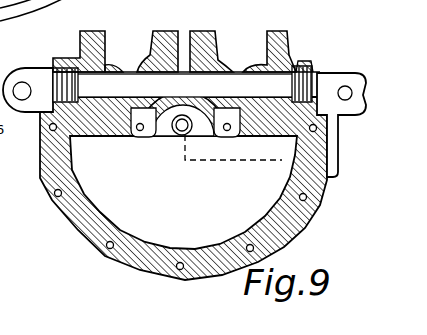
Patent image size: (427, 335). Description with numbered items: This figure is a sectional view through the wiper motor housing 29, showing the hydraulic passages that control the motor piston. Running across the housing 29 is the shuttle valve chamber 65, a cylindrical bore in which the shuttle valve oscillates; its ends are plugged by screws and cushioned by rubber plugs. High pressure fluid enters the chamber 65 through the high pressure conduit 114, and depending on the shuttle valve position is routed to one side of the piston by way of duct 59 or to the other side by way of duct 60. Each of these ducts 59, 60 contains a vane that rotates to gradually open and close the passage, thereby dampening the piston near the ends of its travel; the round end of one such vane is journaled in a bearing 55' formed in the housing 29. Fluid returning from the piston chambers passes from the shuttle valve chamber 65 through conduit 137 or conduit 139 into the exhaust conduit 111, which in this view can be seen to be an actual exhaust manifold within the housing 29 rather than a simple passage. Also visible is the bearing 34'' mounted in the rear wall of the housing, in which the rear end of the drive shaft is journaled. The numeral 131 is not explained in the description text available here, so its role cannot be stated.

The housing 29 is at (308, 220).
The bearing 34'' is at (177, 147).
The bearing 55' is at (183, 133).
The duct 59 is at (222, 138).
The duct 60 is at (142, 138).
The shuttle valve chamber 65 is at (200, 80).
The exhaust conduit 111 is at (155, 38).
The high pressure conduit 114 is at (190, 37).
The block 131 is at (166, 125).
The conduit 137 is at (110, 82).
The conduit 139 is at (250, 78).